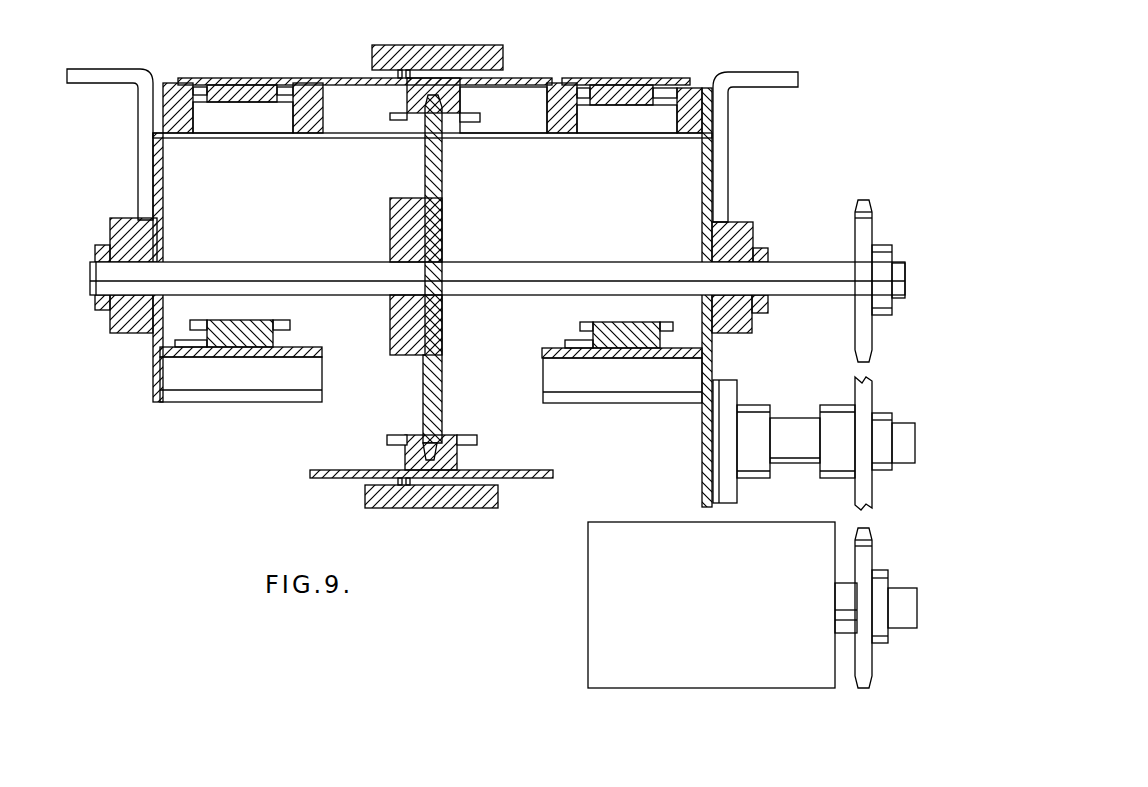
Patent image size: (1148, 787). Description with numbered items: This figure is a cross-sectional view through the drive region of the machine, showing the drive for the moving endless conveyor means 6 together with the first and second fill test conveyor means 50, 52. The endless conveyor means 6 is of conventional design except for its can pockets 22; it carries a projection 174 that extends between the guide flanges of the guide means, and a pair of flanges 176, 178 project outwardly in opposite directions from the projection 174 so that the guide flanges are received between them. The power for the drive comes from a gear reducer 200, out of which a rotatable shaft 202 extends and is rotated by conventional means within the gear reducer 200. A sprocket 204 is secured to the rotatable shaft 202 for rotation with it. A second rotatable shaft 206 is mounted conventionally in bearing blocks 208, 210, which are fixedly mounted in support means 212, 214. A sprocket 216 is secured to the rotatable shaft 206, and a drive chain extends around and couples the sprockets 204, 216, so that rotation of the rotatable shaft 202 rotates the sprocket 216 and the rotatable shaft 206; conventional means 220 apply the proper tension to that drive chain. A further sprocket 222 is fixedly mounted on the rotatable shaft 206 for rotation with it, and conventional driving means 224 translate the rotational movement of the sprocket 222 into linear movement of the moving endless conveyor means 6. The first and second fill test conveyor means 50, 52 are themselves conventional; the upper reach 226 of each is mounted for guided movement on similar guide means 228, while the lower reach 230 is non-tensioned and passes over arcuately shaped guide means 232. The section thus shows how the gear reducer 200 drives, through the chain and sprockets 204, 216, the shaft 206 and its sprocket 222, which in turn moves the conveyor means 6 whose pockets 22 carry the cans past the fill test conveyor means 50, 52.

The endless conveyor means 6 is at (542, 79).
The can pockets 22 is at (503, 55).
The first fill test conveyor means 50 is at (655, 80).
The second fill test conveyor means 52 is at (213, 78).
The projection 174 is at (460, 104).
The flange 176 is at (472, 120).
The flange 178 is at (390, 113).
The gear reducer 200 is at (678, 605).
The rotatable shaft 202 is at (845, 628).
The sprocket 204 is at (870, 553).
The rotatable shaft 206 is at (598, 262).
The bearing block 208 is at (133, 330).
The bearing block 210 is at (740, 232).
The support means 212 is at (150, 178).
The support means 214 is at (722, 133).
The sprocket 216 is at (858, 228).
The tensioning means 220 is at (868, 392).
The sprocket 222 is at (442, 196).
The driving means 224 is at (417, 277).
The upper reach 226 is at (551, 33).
The guide means 228 is at (300, 128).
The lower reach 230 is at (296, 336).
The arcuately shaped guide means 232 is at (320, 352).